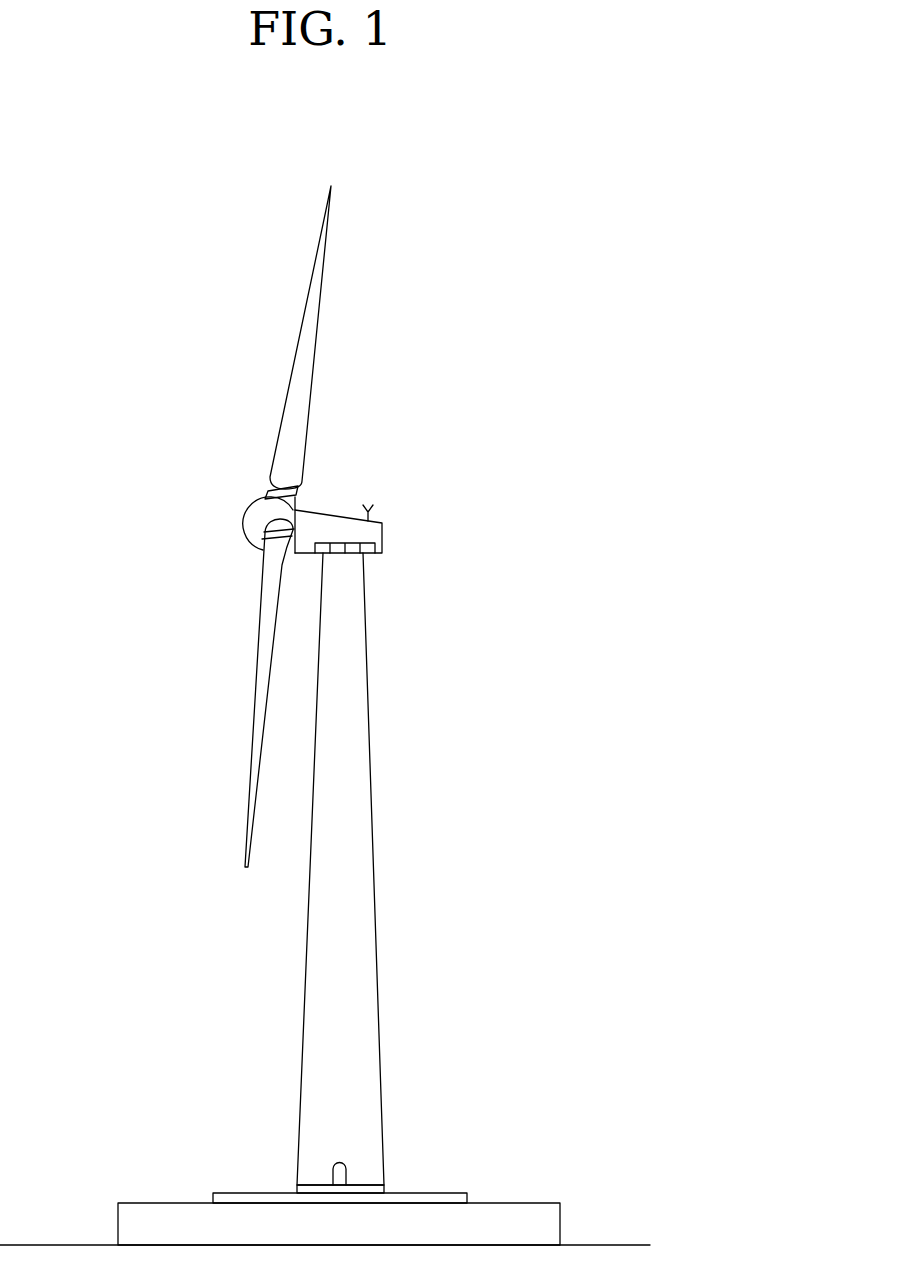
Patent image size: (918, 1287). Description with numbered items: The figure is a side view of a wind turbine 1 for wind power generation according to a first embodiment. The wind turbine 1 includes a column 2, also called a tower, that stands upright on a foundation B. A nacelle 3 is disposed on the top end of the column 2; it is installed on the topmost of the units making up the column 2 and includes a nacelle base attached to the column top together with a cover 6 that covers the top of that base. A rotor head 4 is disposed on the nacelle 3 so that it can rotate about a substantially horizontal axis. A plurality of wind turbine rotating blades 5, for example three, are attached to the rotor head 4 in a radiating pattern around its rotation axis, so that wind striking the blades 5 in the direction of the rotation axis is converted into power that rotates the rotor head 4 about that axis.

The wind turbine 1 is at (452, 206).
The column 2 is at (373, 802).
The nacelle 3 is at (424, 548).
The rotor head 4 is at (240, 513).
The wind turbine rotating blades 5 is at (298, 331).
The cover 6 is at (333, 510).
The foundation B is at (515, 1202).